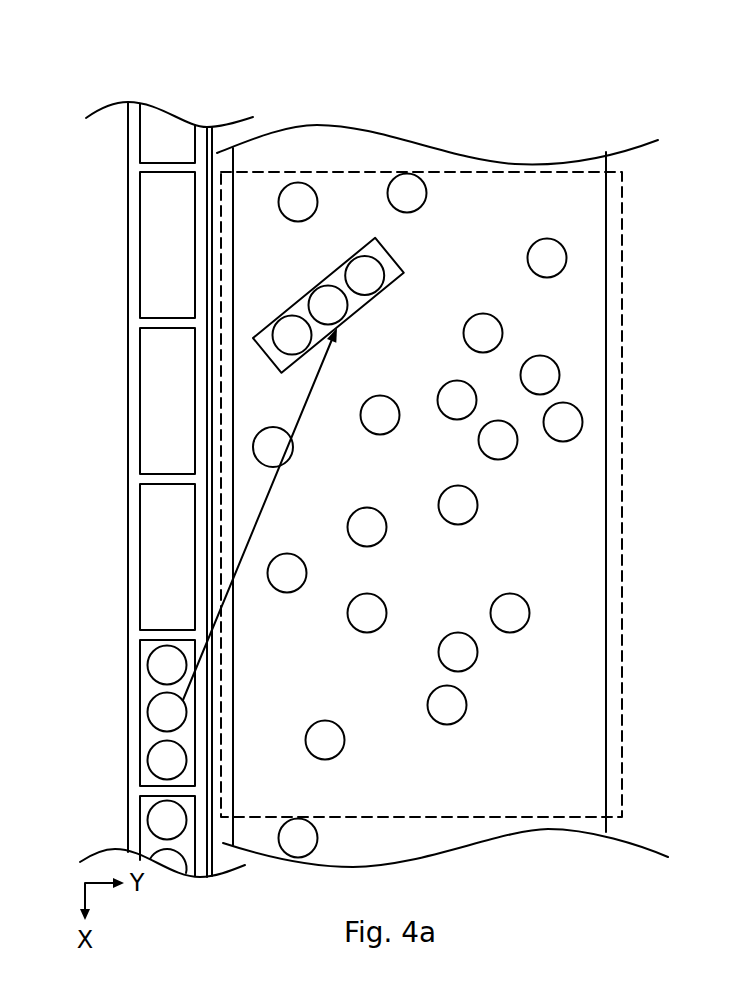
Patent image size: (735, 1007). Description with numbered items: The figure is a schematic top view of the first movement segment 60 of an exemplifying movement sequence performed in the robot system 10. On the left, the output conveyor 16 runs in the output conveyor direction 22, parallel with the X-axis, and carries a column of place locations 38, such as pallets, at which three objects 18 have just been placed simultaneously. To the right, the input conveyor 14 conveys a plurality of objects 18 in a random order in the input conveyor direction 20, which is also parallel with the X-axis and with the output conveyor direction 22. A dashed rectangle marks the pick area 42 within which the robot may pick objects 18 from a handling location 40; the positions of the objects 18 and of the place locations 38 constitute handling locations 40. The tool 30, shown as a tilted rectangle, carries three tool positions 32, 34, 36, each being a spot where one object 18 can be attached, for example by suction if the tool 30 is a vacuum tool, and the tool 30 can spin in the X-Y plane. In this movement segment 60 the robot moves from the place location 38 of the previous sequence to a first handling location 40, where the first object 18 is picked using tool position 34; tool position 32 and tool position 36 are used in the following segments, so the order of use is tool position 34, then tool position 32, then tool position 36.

The robot system 10 is at (124, 75).
The input conveyor 14 is at (323, 150).
The output conveyor 16 is at (132, 152).
The objects 18 is at (285, 213).
The input conveyor direction 20 is at (409, 750).
The output conveyor direction 22 is at (114, 402).
The tool 30 is at (340, 283).
The tool position 32 is at (279, 346).
The tool position 34 is at (345, 318).
The tool position 36 is at (378, 286).
The place location 38 is at (154, 159).
The handling location 40 is at (340, 333).
The pick area 42 is at (613, 218).
The movement segment 60 is at (255, 527).